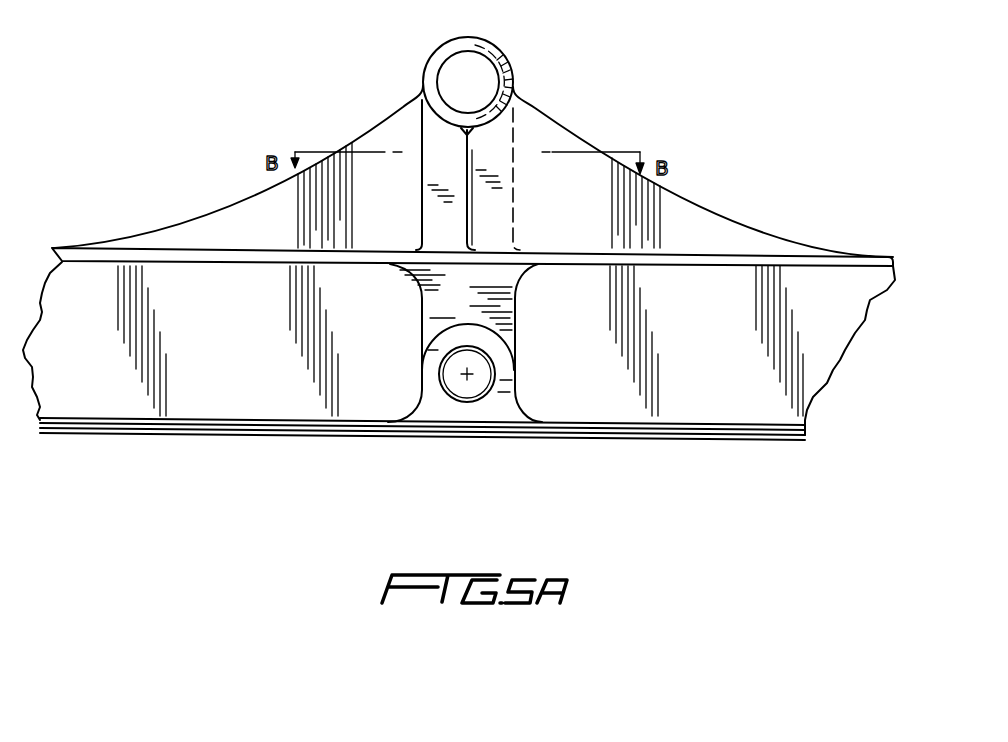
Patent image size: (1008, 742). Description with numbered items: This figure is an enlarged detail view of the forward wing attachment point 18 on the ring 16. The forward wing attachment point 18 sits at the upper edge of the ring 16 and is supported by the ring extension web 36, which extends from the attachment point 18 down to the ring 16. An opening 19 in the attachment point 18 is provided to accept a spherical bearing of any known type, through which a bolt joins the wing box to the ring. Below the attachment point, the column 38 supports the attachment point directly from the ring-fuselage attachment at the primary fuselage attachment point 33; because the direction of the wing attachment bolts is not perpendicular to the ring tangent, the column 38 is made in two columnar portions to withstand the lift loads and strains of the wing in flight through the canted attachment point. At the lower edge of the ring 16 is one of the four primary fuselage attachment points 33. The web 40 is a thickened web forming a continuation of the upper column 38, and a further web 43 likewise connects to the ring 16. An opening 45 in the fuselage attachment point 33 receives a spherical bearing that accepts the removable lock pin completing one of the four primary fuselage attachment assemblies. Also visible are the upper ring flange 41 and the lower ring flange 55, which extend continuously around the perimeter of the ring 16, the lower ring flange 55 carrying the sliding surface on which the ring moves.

The ring 16 is at (160, 283).
The forward wing attachment point 18 is at (505, 58).
The opening 19 is at (455, 78).
The primary fuselage attachment point 33 is at (470, 375).
The ring extension web 36 is at (250, 205).
The column 38 is at (422, 178).
The web 40 is at (412, 287).
The upper ring flange 41 is at (703, 254).
The web 43 is at (518, 295).
The opening 45 is at (442, 398).
The lower ring flange 55 is at (235, 433).